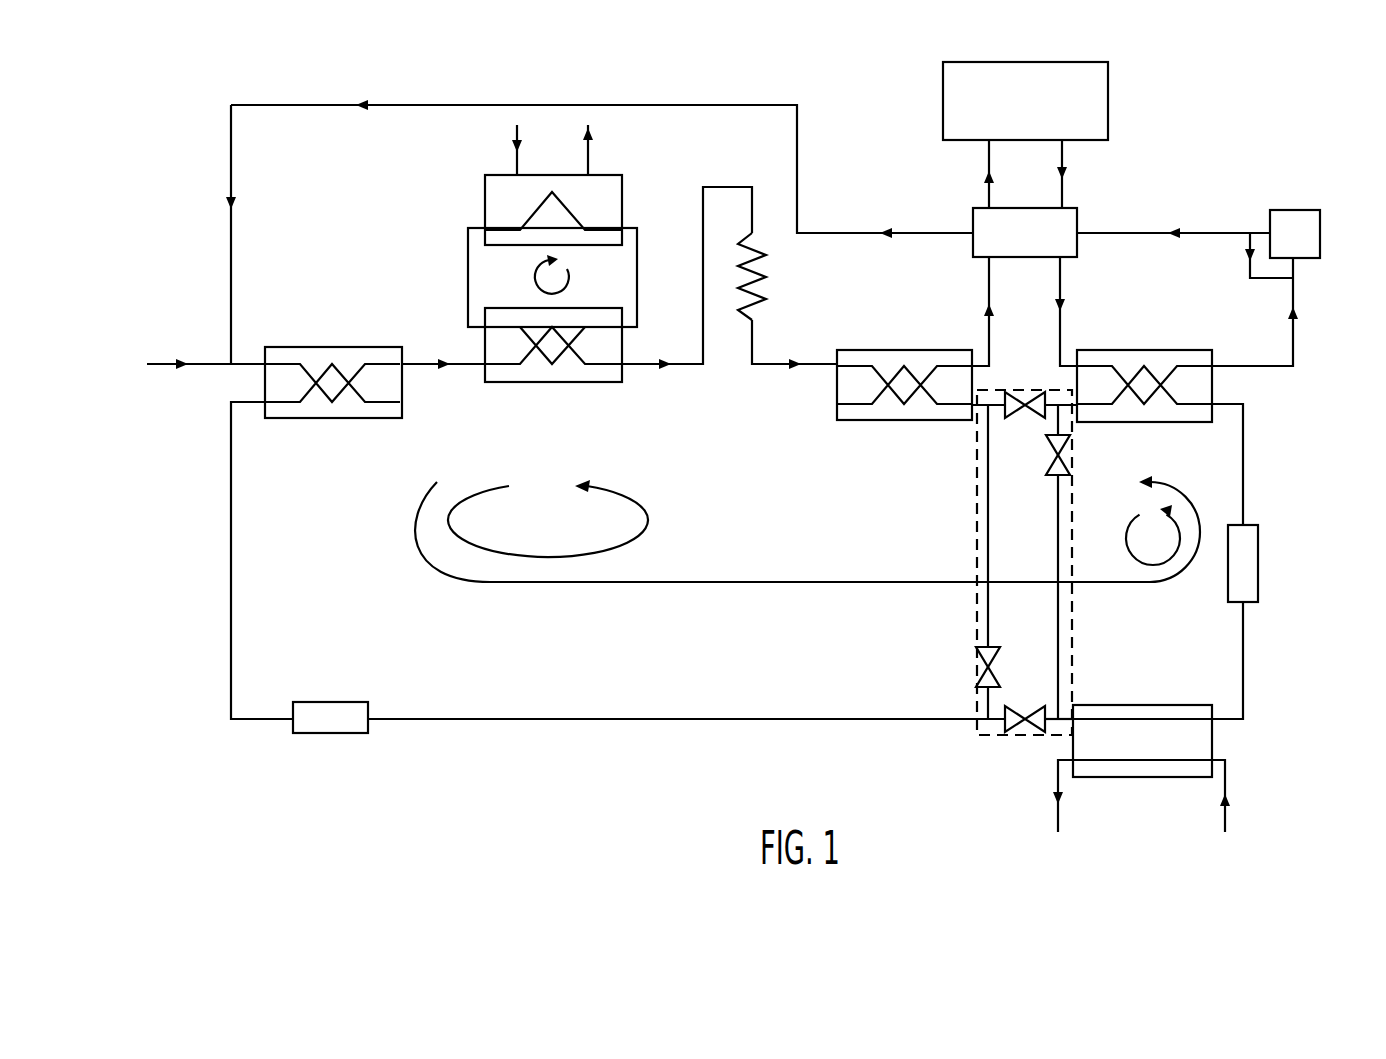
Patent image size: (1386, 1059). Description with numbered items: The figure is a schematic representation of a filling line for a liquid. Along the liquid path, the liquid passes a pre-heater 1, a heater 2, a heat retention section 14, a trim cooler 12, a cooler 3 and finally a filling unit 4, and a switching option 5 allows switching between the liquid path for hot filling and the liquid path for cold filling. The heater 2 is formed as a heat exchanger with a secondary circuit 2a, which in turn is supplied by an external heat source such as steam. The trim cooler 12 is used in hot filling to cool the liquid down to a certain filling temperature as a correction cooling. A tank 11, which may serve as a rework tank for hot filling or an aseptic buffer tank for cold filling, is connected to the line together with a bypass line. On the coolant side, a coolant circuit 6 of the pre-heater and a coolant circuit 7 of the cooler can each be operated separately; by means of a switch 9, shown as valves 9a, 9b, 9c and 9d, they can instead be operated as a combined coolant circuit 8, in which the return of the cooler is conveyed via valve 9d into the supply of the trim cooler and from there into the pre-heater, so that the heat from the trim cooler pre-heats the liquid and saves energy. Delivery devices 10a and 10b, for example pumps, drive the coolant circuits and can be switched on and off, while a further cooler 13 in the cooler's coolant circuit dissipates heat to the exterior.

The pre-heater 1 is at (378, 347).
The heater 2 is at (597, 308).
The secondary circuit 2a is at (535, 279).
The cooler 3 is at (1187, 350).
The filling unit 4 is at (1108, 92).
The switching option 5 is at (1077, 224).
The coolant circuit of the pre-heater 6 is at (650, 522).
The coolant circuit of the cooler 7 is at (1126, 538).
The combined coolant circuit 8 is at (865, 582).
The switch 9 is at (1024, 567).
The valve 9a is at (976, 667).
The valve 9b is at (1031, 733).
The valve 9c is at (1070, 456).
The valve 9d is at (1028, 392).
The delivery device 10a is at (347, 702).
The delivery device 10b is at (1258, 552).
The tank 11 is at (1297, 210).
The trim cooler 12 is at (950, 350).
The further cooler 13 is at (1185, 705).
The heat retention section 14 is at (768, 272).